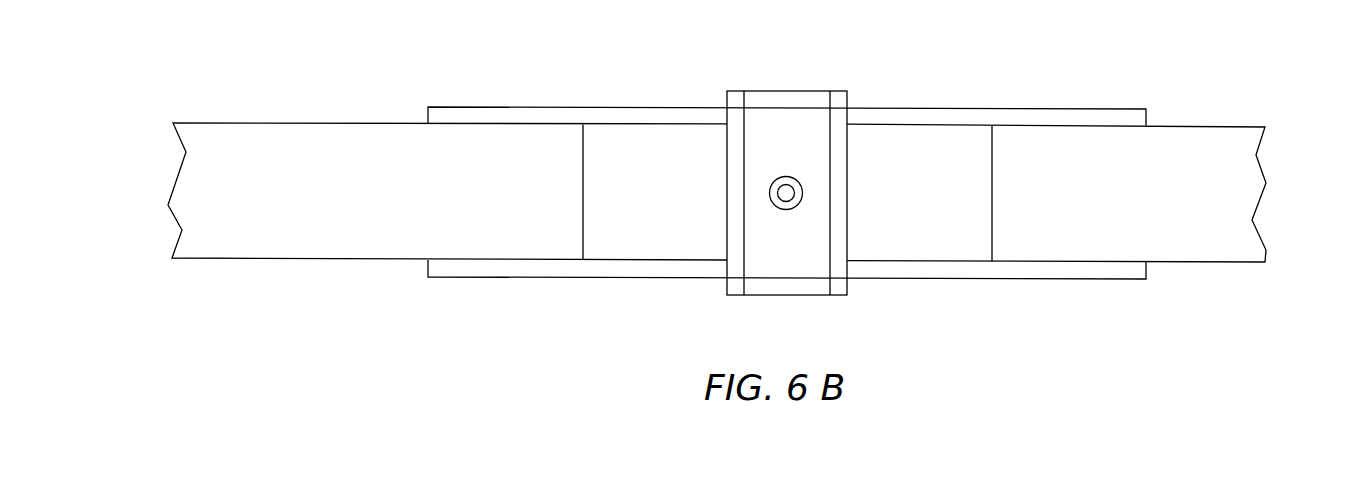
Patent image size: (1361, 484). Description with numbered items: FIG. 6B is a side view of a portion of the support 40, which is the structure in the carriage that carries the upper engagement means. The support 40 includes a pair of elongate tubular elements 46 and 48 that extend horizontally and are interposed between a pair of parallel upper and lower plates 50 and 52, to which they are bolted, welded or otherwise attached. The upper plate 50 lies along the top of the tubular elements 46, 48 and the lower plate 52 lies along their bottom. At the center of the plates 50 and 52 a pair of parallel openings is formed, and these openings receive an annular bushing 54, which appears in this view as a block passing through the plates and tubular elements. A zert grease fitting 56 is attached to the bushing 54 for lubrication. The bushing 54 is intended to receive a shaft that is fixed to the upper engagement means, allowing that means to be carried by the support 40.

The support 40 is at (570, 92).
The elongate tubular element 46 is at (333, 150).
The elongate tubular element 48 is at (1215, 143).
The upper plate 50 is at (1005, 109).
The lower plate 52 is at (947, 268).
The annular bushing 54 is at (847, 91).
The zert grease fitting 56 is at (803, 193).